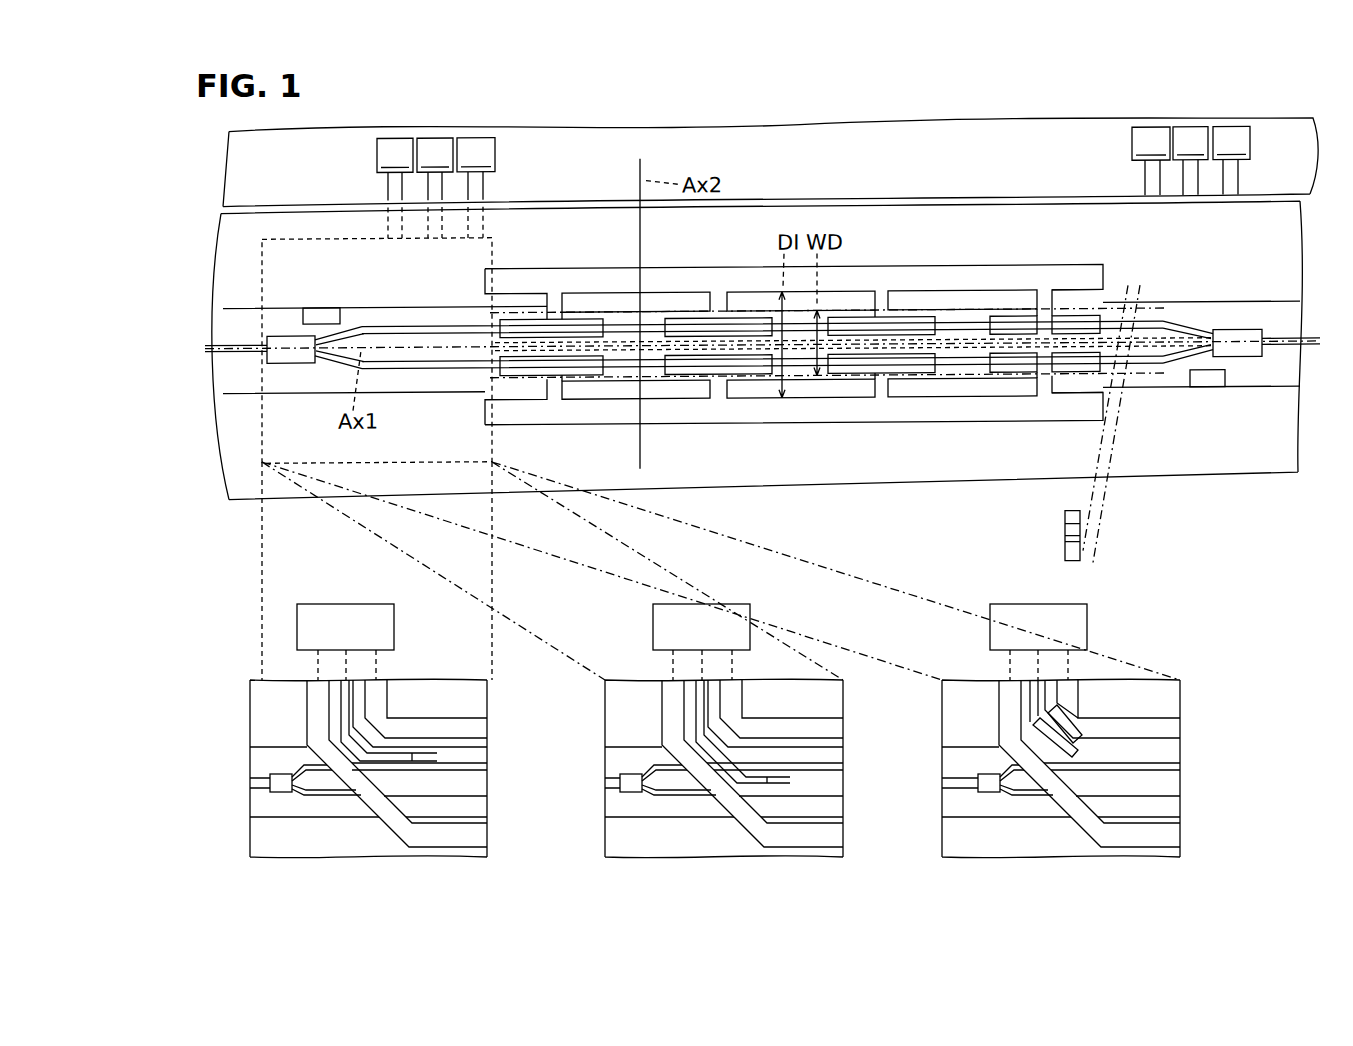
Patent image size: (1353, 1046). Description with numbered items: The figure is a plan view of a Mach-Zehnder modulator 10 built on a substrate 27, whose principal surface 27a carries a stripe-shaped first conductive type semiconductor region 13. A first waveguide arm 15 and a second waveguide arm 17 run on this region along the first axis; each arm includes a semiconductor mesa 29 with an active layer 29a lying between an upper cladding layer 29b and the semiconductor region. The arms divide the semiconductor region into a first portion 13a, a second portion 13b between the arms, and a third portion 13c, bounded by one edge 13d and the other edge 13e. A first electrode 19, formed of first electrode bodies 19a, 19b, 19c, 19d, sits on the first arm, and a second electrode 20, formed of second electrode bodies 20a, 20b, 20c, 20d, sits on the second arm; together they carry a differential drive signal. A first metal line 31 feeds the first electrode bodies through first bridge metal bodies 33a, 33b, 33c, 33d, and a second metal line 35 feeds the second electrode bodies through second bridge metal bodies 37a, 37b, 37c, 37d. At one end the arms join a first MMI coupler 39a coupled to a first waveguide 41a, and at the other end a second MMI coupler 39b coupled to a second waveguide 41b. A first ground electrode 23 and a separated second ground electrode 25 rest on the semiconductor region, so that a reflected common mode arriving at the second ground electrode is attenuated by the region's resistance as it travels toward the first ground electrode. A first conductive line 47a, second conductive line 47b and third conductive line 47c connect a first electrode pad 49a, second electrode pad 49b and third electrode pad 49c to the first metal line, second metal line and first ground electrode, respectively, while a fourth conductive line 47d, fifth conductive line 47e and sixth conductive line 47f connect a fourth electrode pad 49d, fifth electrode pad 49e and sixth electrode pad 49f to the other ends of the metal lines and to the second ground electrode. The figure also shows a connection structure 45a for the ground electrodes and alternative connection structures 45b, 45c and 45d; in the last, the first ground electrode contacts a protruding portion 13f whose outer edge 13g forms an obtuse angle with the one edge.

The Mach-Zehnder modulator 10 is at (1151, 510).
The first conductive type semiconductor region 13 is at (1153, 390).
The first portion 13a is at (428, 324).
The second portion 13b is at (468, 356).
The third portion 13c is at (428, 387).
The one edge 13d is at (457, 305).
The other edge 13e is at (452, 392).
The protruding portion 13f is at (1078, 722).
The outer edge 13g is at (1068, 712).
The first waveguide arm 15 is at (1155, 307).
The second waveguide arm 17 is at (1135, 388).
The first electrode 19 is at (1108, 320).
The first electrode body 19a is at (600, 336).
The first electrode body 19b is at (765, 336).
The first electrode body 19c is at (930, 336).
The first electrode body 19d is at (1089, 336).
The second electrode 20 is at (1106, 357).
The second electrode body 20a is at (600, 374).
The second electrode body 20b is at (765, 374).
The second electrode body 20c is at (930, 374).
The second electrode body 20d is at (1089, 374).
The first ground electrode 23 is at (318, 306).
The second ground electrode 25 is at (1210, 380).
The substrate 27 is at (1207, 488).
The principal surface 27a is at (1256, 460).
The semiconductor mesa 29 is at (1068, 515).
The active layer 29a is at (1065, 543).
The upper cladding layer 29b is at (1065, 530).
The first metal line 31 is at (1089, 269).
The first bridge metal body 33a is at (559, 294).
The first bridge metal body 33b is at (723, 294).
The first bridge metal body 33c is at (885, 294).
The first bridge metal body 33d is at (1047, 294).
The second metal line 35 is at (990, 425).
The second bridge metal body 37a is at (560, 400).
The second bridge metal body 37b is at (722, 400).
The second bridge metal body 37c is at (886, 400).
The second bridge metal body 37d is at (1046, 400).
The first MMI coupler 39a is at (305, 363).
The second MMI coupler 39b is at (1238, 335).
The first waveguide 41a is at (240, 342).
The second waveguide 41b is at (1276, 352).
The connection structure 45a is at (493, 263).
The connection structure 45b is at (457, 680).
The connection structure 45c is at (618, 680).
The connection structure 45d is at (950, 680).
The first conductive line 47a is at (484, 222).
The second conductive line 47b is at (389, 222).
The third conductive line 47c is at (421, 222).
The fourth conductive line 47d is at (1143, 190).
The fifth conductive line 47e is at (1242, 175).
The sixth conductive line 47f is at (1194, 185).
The first electrode pad 49a is at (476, 188).
The second electrode pad 49b is at (395, 188).
The third electrode pad 49c is at (435, 188).
The fourth electrode pad 49d is at (1151, 161).
The fifth electrode pad 49e is at (1231, 160).
The sixth electrode pad 49f is at (1190, 161).